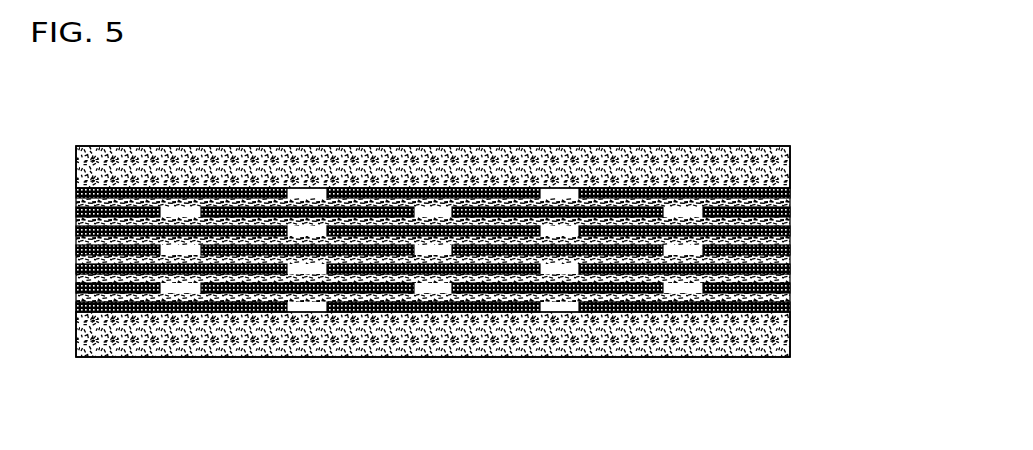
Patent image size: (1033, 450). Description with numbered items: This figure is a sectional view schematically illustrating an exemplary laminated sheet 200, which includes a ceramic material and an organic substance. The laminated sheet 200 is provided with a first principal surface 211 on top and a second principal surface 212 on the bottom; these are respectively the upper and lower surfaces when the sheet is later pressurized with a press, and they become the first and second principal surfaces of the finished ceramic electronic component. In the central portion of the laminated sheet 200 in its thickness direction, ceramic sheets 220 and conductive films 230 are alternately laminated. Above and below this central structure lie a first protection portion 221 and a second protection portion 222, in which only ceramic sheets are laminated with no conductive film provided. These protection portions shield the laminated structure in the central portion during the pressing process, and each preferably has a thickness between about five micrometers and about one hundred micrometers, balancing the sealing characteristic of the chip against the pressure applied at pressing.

The laminated sheet 200 is at (780, 125).
The first principal surface 211 is at (212, 147).
The second principal surface 212 is at (213, 357).
The first protection portion 221 is at (627, 155).
The second protection portion 222 is at (737, 343).
The ceramic sheets 220 is at (620, 298).
The conductive films 230 is at (752, 189).